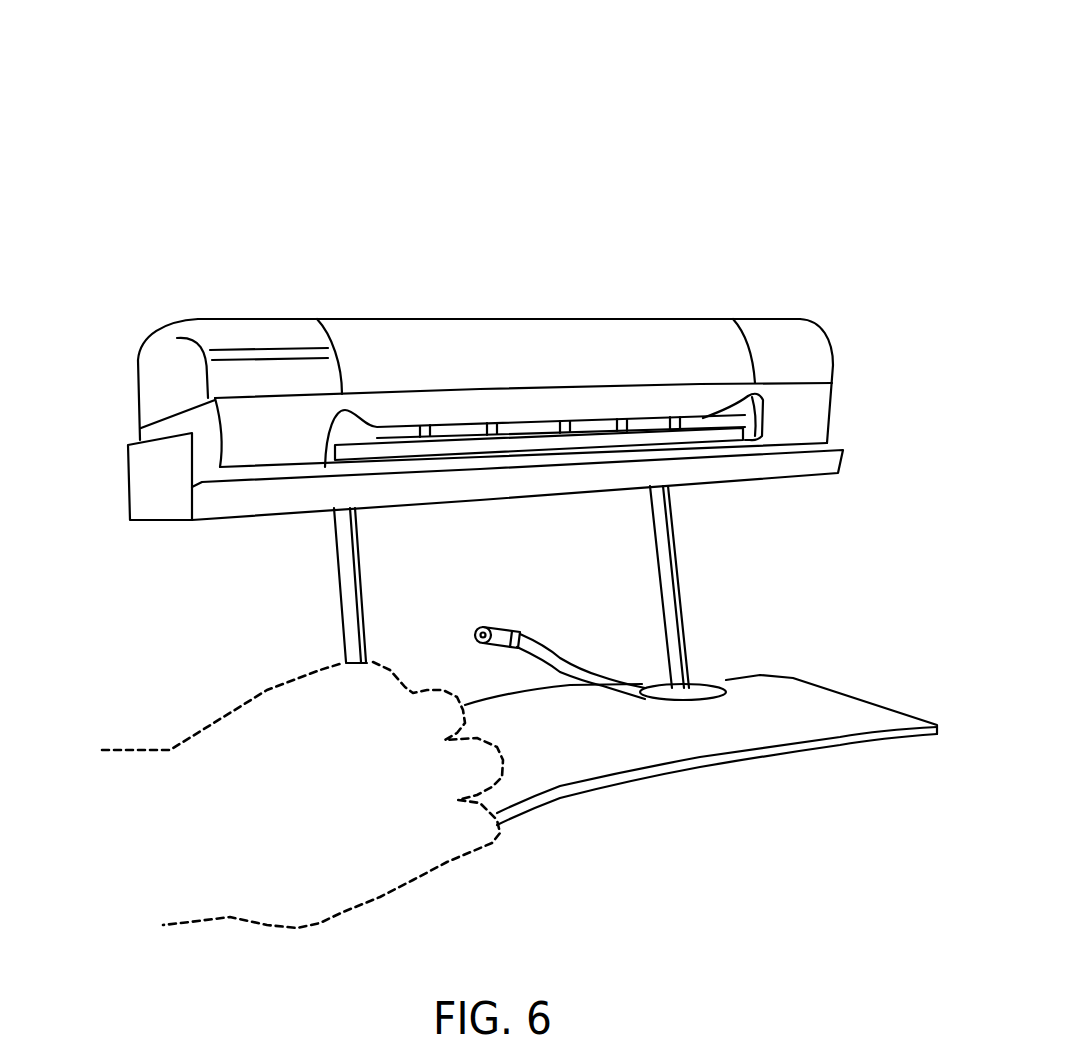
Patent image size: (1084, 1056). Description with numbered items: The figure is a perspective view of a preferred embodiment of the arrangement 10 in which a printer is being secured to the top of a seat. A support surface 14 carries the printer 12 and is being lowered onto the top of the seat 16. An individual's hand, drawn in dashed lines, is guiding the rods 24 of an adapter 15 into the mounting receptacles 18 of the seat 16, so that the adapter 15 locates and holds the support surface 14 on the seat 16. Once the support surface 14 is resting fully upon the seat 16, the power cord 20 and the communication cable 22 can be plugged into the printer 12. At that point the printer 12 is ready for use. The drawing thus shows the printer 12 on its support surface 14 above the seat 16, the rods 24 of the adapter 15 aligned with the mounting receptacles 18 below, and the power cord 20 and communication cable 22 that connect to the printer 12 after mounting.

The imaging apparatus 10 is at (645, 155).
The printer 12 is at (470, 338).
The support surface 14 is at (253, 498).
The adapter 15 is at (622, 518).
The seat 16 is at (647, 738).
The mounting receptacles 18 is at (710, 678).
The power cord 20 is at (537, 637).
The communication cable 22 is at (568, 685).
The rods 24 is at (661, 586).